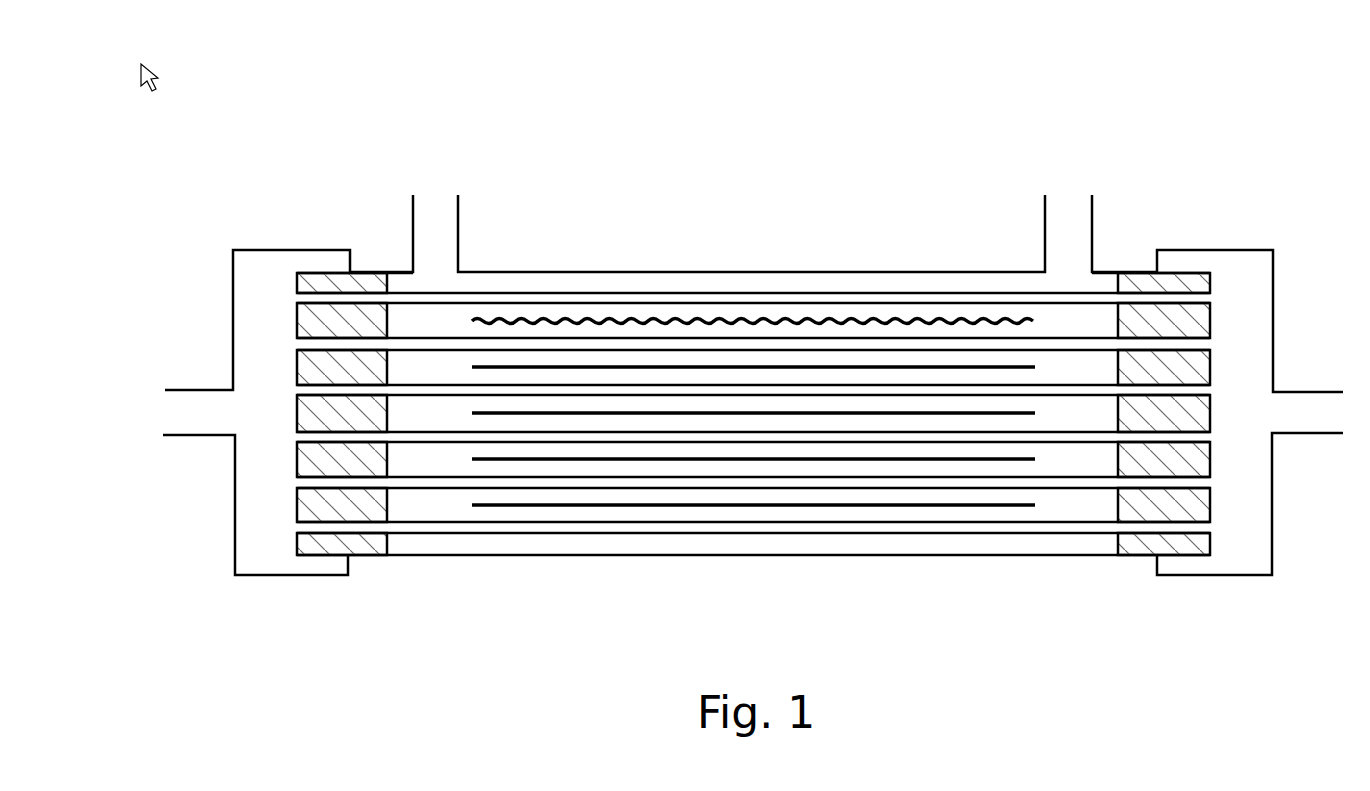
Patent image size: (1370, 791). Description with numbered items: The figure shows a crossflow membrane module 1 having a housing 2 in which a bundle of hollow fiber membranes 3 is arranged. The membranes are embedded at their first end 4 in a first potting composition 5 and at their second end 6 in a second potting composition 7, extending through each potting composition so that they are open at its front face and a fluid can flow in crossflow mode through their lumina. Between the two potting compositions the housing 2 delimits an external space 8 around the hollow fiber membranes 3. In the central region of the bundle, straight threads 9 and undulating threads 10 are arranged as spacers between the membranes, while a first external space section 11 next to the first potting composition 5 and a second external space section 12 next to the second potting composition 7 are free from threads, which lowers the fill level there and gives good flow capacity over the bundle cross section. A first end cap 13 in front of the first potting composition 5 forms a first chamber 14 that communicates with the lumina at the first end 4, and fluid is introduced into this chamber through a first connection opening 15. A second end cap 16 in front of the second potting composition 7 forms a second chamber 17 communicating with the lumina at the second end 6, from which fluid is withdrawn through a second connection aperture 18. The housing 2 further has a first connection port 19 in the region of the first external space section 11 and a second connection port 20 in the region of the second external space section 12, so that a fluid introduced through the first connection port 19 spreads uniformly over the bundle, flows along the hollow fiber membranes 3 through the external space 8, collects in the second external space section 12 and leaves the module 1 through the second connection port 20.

The membrane module 1 is at (783, 150).
The housing 2 is at (835, 270).
The hollow fiber membranes 3 is at (995, 532).
The first end 4 is at (325, 530).
The first potting composition 5 is at (350, 508).
The second end 6 is at (1143, 529).
The second potting composition 7 is at (1187, 507).
The external space 8 is at (632, 545).
The straight threads 9 is at (723, 507).
The undulating threads 10 is at (548, 320).
The first external space section 11 is at (442, 507).
The second external space section 12 is at (1093, 323).
The first end cap 13 is at (230, 538).
The first chamber 14 is at (255, 558).
The first connection opening 15 is at (183, 437).
The second end cap 16 is at (1247, 577).
The second chamber 17 is at (1247, 277).
The second connection aperture 18 is at (1307, 390).
The first connection port 19 is at (462, 207).
The second connection port 20 is at (1093, 203).